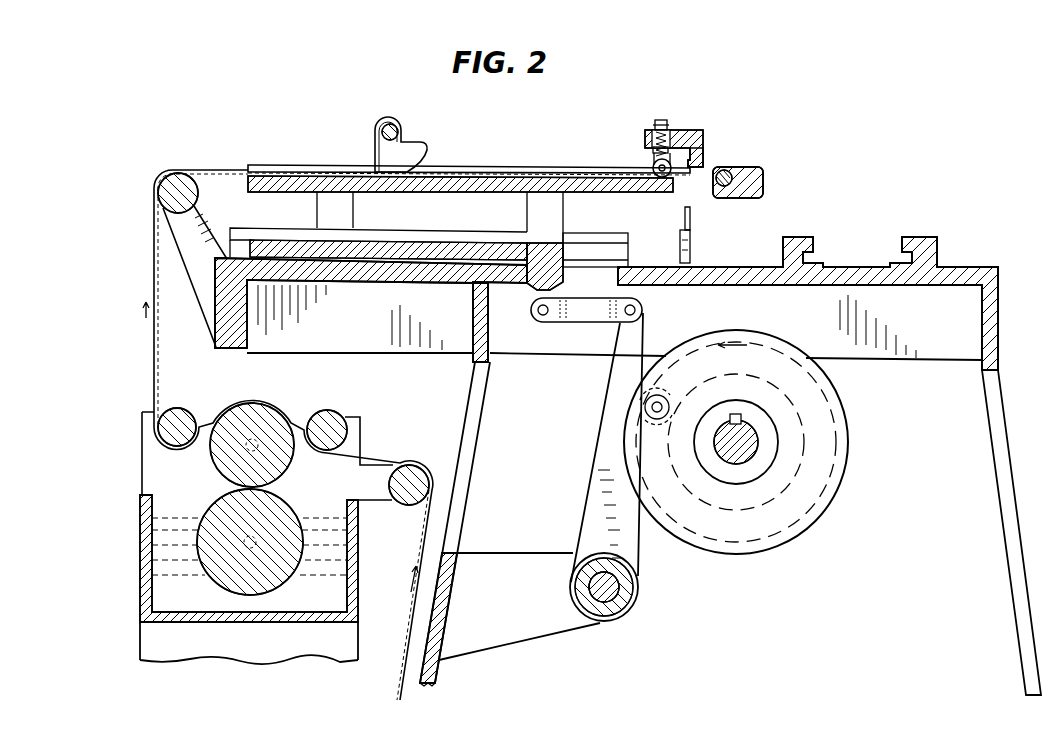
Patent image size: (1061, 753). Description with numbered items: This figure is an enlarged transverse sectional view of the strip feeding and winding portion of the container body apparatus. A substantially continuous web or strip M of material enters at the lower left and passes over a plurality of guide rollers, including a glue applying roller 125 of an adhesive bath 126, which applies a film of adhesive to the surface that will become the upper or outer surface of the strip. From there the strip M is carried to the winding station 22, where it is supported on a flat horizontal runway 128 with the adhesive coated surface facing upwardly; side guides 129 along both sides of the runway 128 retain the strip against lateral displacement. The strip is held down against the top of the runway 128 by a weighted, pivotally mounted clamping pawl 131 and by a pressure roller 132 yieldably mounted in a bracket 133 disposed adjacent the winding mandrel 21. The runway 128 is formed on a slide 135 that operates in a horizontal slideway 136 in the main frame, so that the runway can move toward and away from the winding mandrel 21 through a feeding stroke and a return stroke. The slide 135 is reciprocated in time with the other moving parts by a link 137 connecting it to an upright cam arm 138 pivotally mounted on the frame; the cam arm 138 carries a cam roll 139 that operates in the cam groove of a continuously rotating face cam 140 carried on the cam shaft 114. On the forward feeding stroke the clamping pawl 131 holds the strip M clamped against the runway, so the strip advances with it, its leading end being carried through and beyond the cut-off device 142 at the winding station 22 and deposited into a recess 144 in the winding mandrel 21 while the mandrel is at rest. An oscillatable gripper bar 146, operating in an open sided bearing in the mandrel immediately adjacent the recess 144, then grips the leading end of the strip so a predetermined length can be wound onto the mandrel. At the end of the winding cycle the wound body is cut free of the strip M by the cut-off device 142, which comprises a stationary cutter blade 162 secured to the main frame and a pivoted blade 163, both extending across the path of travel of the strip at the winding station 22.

The winding mandrel 21 is at (763, 187).
The winding station 22 is at (621, 141).
The cam shaft 114 is at (757, 450).
The glue applying roller 125 is at (207, 472).
The adhesive bath 126 is at (148, 566).
The runway 128 is at (453, 189).
The side guides 129 is at (277, 167).
The clamping pawl 131 is at (385, 144).
The pressure roller 132 is at (648, 170).
The bracket 133 is at (682, 131).
The slide 135 is at (287, 248).
The slideway 136 is at (588, 251).
The link 137 is at (578, 318).
The cam arm 138 is at (596, 467).
The cam roll 139 is at (651, 393).
The face cam 140 is at (847, 431).
The cut-off device 142 is at (723, 151).
The recess 144 is at (712, 183).
The gripper bar 146 is at (743, 170).
The stationary cutter blade 162 is at (687, 152).
The pivoted blade 163 is at (692, 218).
The strip M is at (154, 345).